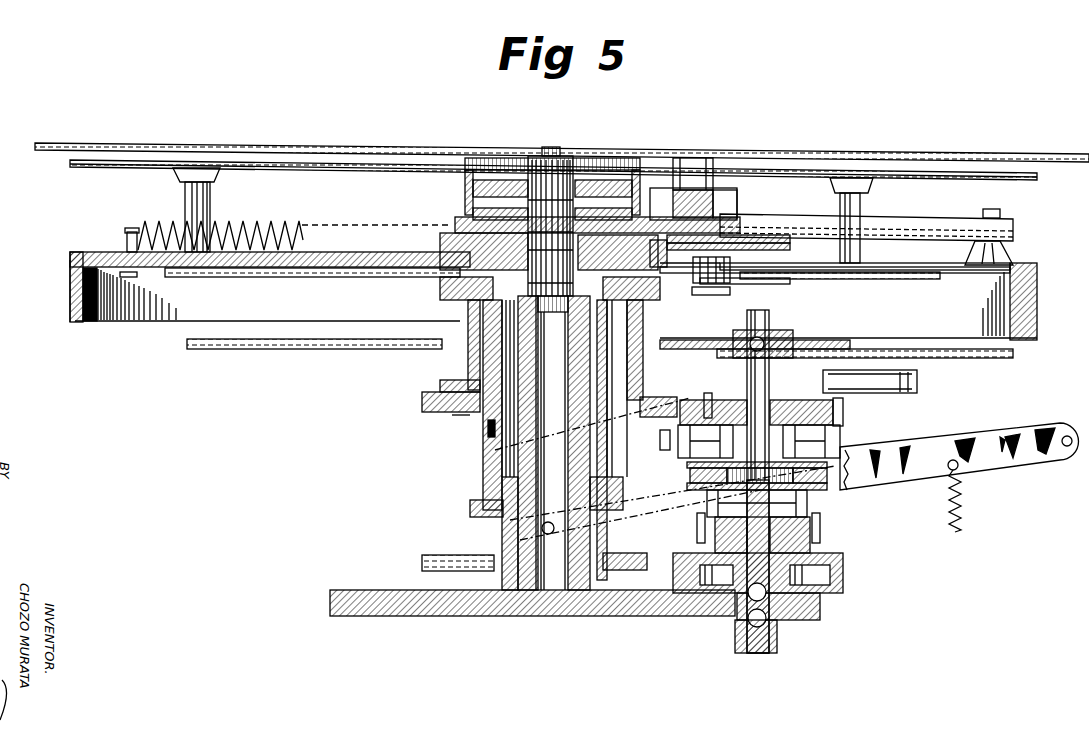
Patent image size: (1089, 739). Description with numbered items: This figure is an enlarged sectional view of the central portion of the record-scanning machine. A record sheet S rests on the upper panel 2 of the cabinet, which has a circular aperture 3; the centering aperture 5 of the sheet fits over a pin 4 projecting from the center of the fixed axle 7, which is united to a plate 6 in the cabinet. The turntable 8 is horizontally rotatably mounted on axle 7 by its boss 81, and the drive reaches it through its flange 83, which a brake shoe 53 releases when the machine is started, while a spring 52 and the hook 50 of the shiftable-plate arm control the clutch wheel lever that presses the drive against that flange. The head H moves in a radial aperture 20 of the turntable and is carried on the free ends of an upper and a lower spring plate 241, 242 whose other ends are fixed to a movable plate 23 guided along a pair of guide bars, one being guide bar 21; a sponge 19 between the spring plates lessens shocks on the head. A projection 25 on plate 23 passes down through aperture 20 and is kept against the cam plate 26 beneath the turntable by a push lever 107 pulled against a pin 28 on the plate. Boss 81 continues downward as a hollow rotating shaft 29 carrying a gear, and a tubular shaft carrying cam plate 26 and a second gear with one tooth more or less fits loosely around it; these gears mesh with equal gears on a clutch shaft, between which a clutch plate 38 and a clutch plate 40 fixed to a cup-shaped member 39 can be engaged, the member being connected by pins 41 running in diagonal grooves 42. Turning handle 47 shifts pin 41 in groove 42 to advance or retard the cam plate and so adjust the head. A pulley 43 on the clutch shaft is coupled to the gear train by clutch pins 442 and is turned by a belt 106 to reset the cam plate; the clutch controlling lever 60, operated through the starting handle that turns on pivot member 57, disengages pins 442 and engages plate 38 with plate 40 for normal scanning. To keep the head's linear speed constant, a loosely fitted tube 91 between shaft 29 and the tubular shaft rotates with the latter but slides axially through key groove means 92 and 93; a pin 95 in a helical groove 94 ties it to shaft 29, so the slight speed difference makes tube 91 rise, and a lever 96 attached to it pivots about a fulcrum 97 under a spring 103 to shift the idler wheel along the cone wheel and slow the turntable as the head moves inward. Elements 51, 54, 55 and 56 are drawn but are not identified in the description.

The record sheet S is at (330, 144).
The upper panel 2 is at (83, 161).
The circular aperture 3 is at (145, 161).
The pin 4 is at (558, 152).
The centering aperture 5 is at (542, 148).
The plate 6 is at (437, 606).
The fixed axle 7 is at (527, 606).
The turntable 8 is at (118, 322).
The boss 81 is at (447, 243).
The flange 83 is at (70, 302).
The sponge 19 is at (660, 190).
The radial aperture 20 is at (997, 272).
The guide bar 21 is at (921, 220).
The movable plate 23 is at (787, 237).
The spring plate 241 is at (705, 188).
The spring plate 242 is at (743, 204).
The projection 25 is at (683, 290).
The cam plate 26 is at (345, 278).
The pin 28 is at (711, 290).
The hollow rotating shaft 29 is at (500, 545).
The clutch plate 38 is at (745, 460).
The cup-shaped member 39 is at (707, 494).
The clutch plate 40 is at (690, 478).
The pin 41 is at (822, 545).
The diagonal groove 42 is at (800, 520).
The pulley 43 is at (800, 360).
The clutch pin 442 is at (703, 418).
The handle 47 is at (825, 556).
The hook 50 is at (425, 565).
The sleeve 51 is at (465, 362).
The spring 52 is at (470, 305).
The brake shoe 53 is at (425, 402).
The bearing 54 is at (792, 338).
The bearing block 55 is at (808, 620).
The bearing block 56 is at (840, 583).
The pivot member 57 is at (847, 412).
The clutch controlling lever 60 is at (818, 434).
The loosely fitted tube 91 is at (478, 496).
The key groove means 92 is at (483, 472).
The key groove means 93 is at (450, 422).
The helical groove 94 is at (488, 430).
The pin 95 is at (660, 445).
The lever 96 is at (951, 447).
The fulcrum 97 is at (735, 612).
The spring 103 is at (968, 492).
The belt 106 is at (917, 380).
The push lever 107 is at (766, 287).
The head H is at (689, 160).